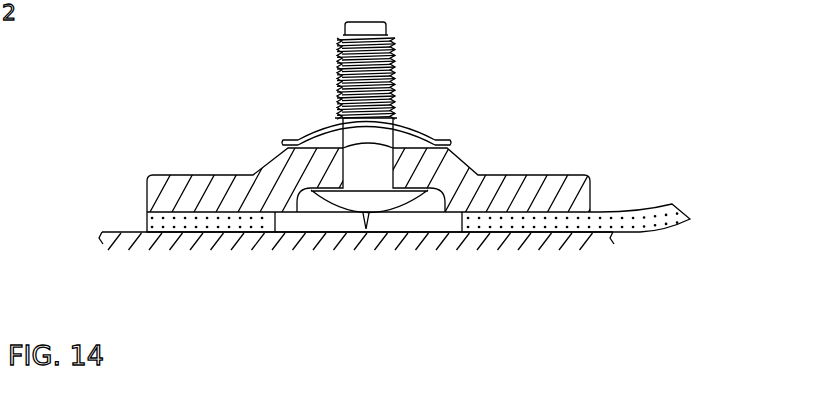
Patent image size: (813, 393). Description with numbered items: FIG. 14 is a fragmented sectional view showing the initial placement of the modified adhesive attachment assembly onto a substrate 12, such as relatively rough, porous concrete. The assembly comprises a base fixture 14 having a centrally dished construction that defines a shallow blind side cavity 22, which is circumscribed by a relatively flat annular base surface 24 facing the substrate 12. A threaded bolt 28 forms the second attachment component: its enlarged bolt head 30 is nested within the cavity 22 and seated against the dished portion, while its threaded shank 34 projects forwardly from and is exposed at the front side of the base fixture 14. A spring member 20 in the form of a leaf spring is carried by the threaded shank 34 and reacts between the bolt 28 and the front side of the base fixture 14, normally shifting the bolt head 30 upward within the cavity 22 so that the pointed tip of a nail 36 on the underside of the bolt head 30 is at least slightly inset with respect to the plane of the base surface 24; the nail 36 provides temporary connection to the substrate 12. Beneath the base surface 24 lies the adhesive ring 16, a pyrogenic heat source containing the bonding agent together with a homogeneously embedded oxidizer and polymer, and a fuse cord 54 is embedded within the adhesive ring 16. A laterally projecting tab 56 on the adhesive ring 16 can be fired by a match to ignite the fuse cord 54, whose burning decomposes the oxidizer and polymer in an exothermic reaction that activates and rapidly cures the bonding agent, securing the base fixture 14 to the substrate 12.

The substrate 12 is at (583, 243).
The base fixture 14 is at (197, 175).
The adhesive ring 16 is at (220, 233).
The spring member 20 is at (320, 135).
The cavity 22 is at (295, 212).
The base surface 24 is at (513, 218).
The threaded bolt 28 is at (340, 65).
The bolt head 30 is at (345, 200).
The threaded shank 34 is at (392, 70).
The nail 36 is at (366, 214).
The fuse cord 54 is at (185, 232).
The tab 56 is at (637, 212).